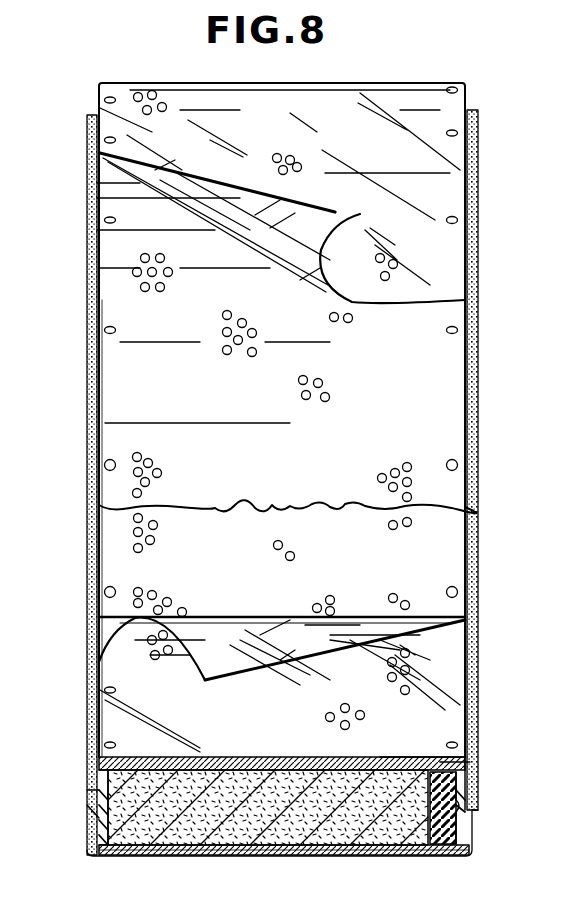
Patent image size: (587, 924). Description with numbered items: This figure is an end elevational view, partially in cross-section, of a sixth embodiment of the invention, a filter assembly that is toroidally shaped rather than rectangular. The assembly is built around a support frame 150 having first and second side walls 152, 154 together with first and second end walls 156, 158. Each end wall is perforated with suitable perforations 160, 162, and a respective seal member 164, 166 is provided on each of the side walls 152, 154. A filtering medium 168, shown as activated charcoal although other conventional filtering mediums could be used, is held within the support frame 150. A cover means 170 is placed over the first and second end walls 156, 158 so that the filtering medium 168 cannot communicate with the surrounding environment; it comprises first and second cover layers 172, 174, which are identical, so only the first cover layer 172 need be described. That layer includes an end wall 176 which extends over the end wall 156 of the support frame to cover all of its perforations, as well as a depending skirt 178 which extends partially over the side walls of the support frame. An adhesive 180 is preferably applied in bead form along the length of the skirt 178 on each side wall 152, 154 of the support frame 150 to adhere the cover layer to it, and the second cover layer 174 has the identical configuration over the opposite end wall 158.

The support frame 150 is at (95, 542).
The first side wall 152 is at (90, 796).
The second side wall 154 is at (460, 824).
The first end wall 156 is at (395, 765).
The second end wall 158 is at (393, 852).
The perforations 160 is at (400, 592).
The perforations 162 is at (150, 290).
The seal member 164 is at (470, 798).
The seal member 166 is at (100, 805).
The filtering medium 168 is at (110, 822).
The cover means 170 is at (160, 858).
The first cover layer 172 is at (215, 658).
The second cover layer 174 is at (337, 214).
The end wall 176 is at (150, 757).
The depending skirt 178 is at (468, 768).
The adhesive 180 is at (100, 770).